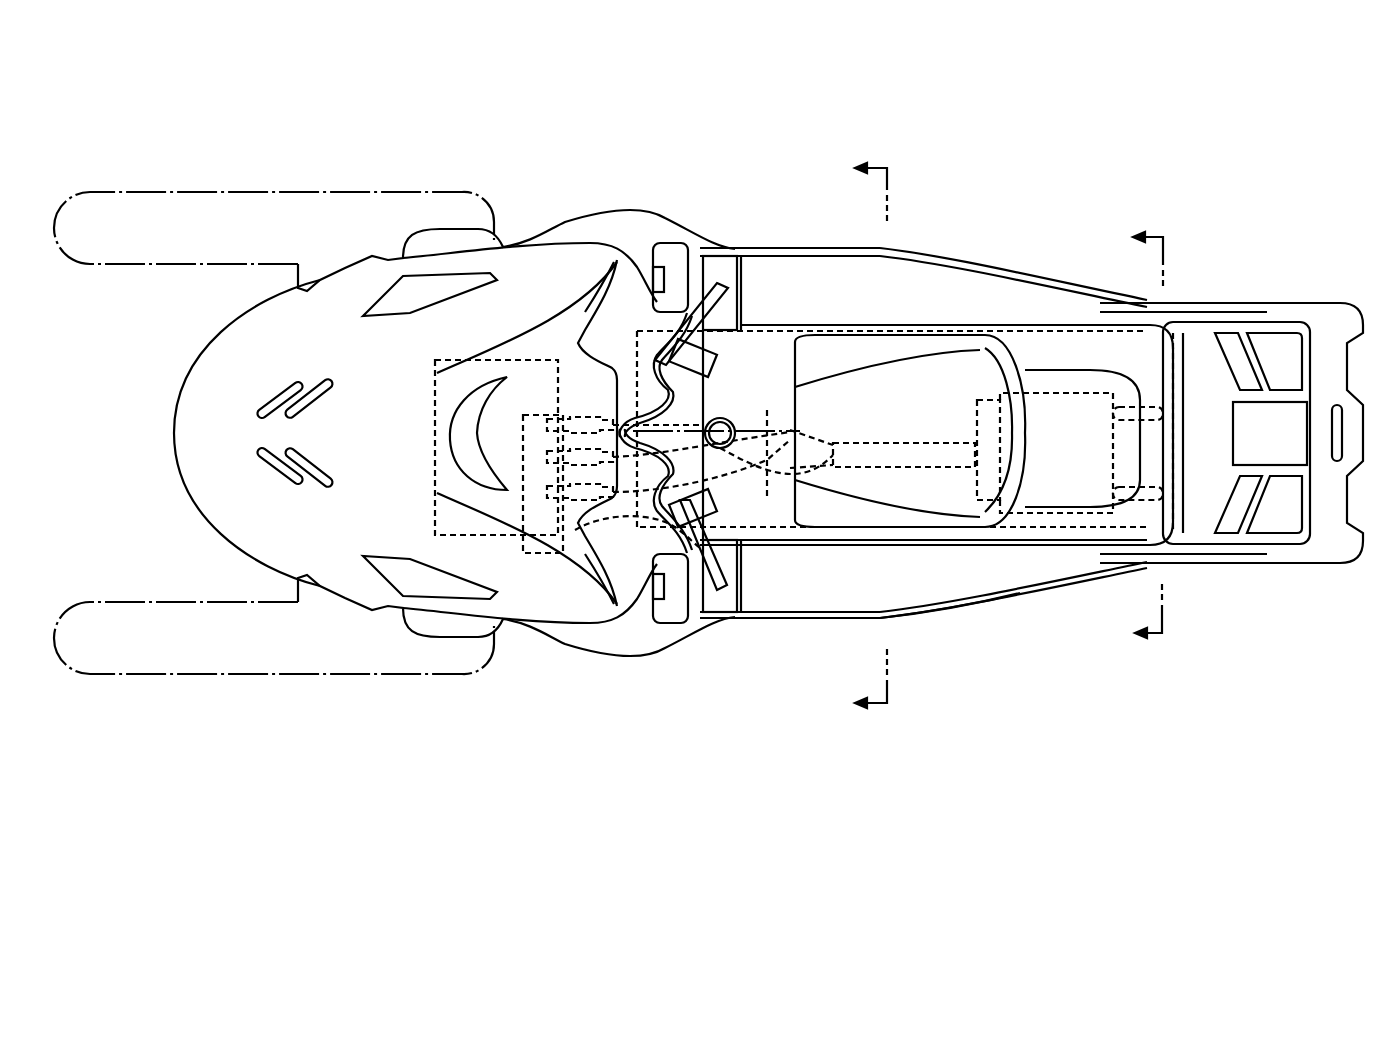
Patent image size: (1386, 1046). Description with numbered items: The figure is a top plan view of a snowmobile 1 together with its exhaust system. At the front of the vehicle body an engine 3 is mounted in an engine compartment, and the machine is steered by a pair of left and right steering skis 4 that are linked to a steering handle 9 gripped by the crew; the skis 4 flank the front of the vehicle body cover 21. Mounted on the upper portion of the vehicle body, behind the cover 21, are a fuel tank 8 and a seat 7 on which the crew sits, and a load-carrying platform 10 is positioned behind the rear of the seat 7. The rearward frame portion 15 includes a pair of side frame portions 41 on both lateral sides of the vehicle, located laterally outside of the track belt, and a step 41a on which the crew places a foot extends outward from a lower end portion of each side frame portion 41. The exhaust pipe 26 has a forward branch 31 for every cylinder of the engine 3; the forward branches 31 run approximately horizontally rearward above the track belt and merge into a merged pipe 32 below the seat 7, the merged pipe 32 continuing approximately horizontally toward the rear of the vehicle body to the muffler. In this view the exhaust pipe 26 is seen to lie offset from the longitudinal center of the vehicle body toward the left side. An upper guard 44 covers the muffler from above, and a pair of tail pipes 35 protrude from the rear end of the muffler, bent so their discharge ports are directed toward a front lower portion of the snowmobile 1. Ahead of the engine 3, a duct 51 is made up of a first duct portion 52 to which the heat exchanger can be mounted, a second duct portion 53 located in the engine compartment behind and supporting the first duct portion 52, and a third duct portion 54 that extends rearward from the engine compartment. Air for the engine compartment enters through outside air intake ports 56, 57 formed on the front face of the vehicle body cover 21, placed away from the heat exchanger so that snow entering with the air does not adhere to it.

The snowmobile 1 is at (1157, 163).
The engine 3 is at (487, 536).
The steering ski 4 is at (203, 187).
The seat 7 is at (937, 380).
The fuel tank 8 is at (786, 355).
The steering handle 9 is at (728, 253).
The load-carrying platform 10 is at (1198, 372).
The rearward frame portion 15 is at (923, 620).
The vehicle body cover 21 is at (267, 303).
The exhaust pipe 26 is at (645, 525).
The forward branch 31 is at (755, 430).
The merged pipe 32 is at (923, 467).
The tail pipe 35 is at (1167, 413).
The side frame portion 41 is at (1030, 287).
The step 41a is at (918, 282).
The upper guard 44 is at (1078, 385).
The duct 51 is at (625, 513).
The first duct portion 52 is at (530, 557).
The second duct portion 53 is at (610, 533).
The third duct portion 54 is at (853, 530).
The outside air intake port 56 is at (317, 380).
The outside air intake port 57 is at (432, 273).